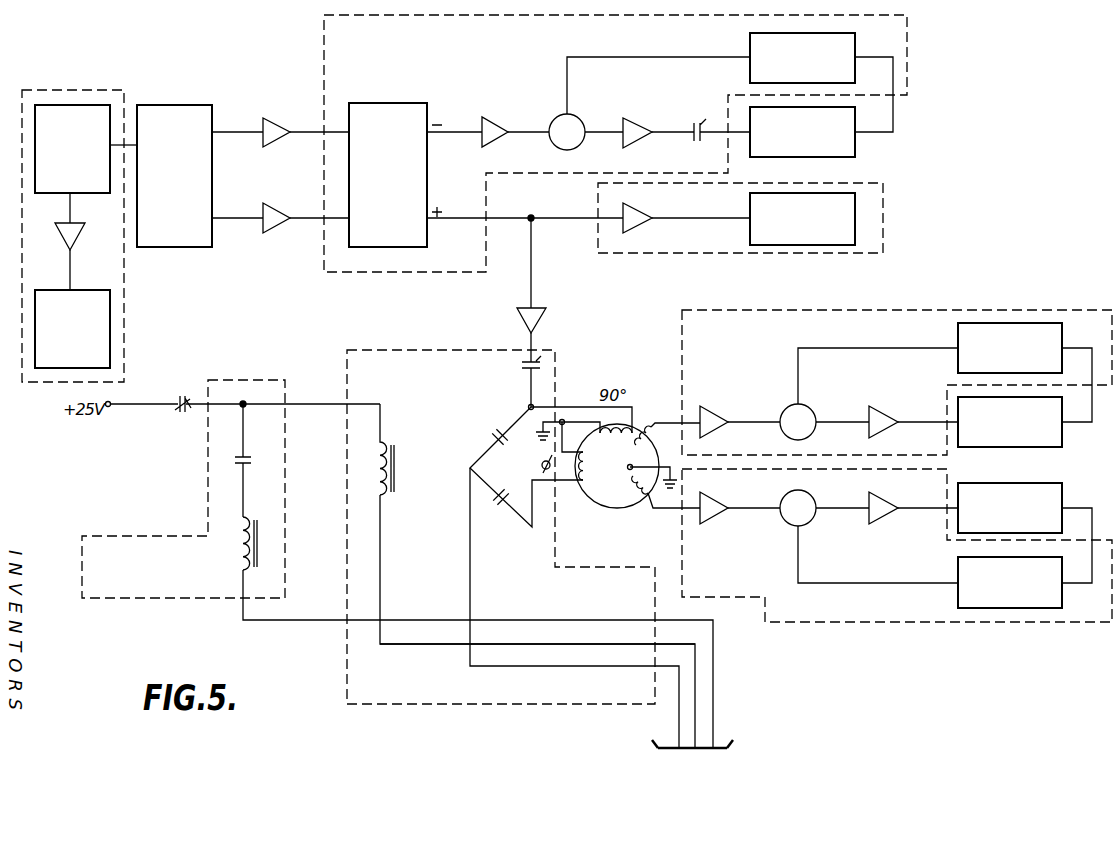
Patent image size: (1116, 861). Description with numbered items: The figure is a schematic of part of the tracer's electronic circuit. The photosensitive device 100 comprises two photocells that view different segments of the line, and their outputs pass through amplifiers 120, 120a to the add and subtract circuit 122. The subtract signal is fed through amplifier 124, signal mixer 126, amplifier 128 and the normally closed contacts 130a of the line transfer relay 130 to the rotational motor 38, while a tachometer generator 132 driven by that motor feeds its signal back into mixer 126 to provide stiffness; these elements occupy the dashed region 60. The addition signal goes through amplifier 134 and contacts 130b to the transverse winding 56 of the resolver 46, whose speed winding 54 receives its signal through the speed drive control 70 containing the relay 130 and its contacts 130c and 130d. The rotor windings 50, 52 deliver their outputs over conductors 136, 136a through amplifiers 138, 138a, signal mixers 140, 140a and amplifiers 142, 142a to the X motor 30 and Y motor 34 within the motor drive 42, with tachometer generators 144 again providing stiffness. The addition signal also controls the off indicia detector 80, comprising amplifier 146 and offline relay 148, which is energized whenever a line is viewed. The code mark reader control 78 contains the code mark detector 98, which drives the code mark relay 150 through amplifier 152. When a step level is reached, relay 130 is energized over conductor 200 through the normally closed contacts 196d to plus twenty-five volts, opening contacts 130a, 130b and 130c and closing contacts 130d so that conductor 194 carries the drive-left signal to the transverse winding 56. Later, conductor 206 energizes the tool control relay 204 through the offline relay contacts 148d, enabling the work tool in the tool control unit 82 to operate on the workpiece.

The X motor 30 is at (1062, 440).
The Y motor 34 is at (1062, 488).
The rotational motor 38 is at (855, 148).
The motor drive 42 is at (886, 306).
The resolver 46 is at (615, 509).
The rotor winding 50 is at (651, 438).
The rotor winding 52 is at (641, 500).
The speed winding 54 is at (583, 489).
The transverse winding 56 is at (648, 425).
The signal processing unit 60 is at (323, 272).
The speed drive control circuit 70 is at (403, 350).
The code mark reader control 78 is at (125, 272).
The off indicia detector 80 is at (597, 243).
The tool control unit 82 is at (285, 504).
The code mark detector 98 is at (58, 193).
The photosensitive device 100 is at (172, 105).
The amplifier 120 is at (272, 118).
The amplifier 120a is at (290, 202).
The add and subtract circuit 122 is at (413, 103).
The amplifier 124 is at (490, 126).
The signal mixer 126 is at (574, 116).
The amplifier 128 is at (640, 118).
The line transfer relay 130 is at (388, 501).
The normally closed contacts 130a is at (695, 140).
The contacts 130b is at (523, 368).
The contacts 130c is at (497, 507).
The contacts 130d is at (495, 437).
The tachometer generator 132 is at (750, 42).
The amplifier 134 is at (539, 318).
The conductor 136 is at (684, 420).
The conductor 136a is at (668, 512).
The amplifier 138 is at (716, 416).
The amplifier 138a is at (706, 523).
The signal mixer 140 is at (809, 412).
The signal mixer 140a is at (805, 527).
The amplifier 142 is at (886, 416).
The amplifier 142a is at (876, 526).
The tachometer generator 144 is at (958, 340).
The amplifier 146 is at (638, 230).
The offline relay 148 is at (750, 205).
The offline relay contacts 148d is at (247, 464).
The code mark relay 150 is at (111, 312).
The amplifier 152 is at (77, 245).
The conductor 194 is at (470, 586).
The normally closed contacts 196d is at (188, 384).
The conductor 200 is at (566, 646).
The tool control relay 204 is at (244, 538).
The conductor 206 is at (713, 699).